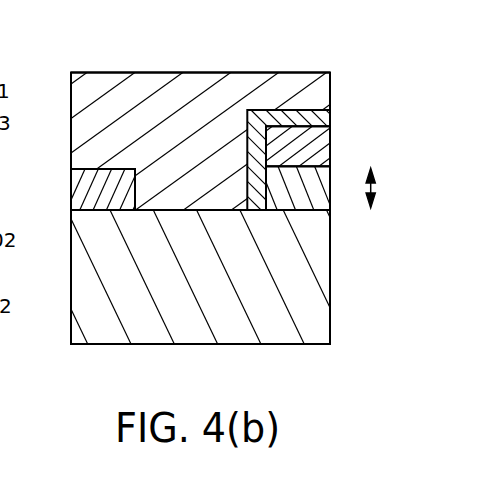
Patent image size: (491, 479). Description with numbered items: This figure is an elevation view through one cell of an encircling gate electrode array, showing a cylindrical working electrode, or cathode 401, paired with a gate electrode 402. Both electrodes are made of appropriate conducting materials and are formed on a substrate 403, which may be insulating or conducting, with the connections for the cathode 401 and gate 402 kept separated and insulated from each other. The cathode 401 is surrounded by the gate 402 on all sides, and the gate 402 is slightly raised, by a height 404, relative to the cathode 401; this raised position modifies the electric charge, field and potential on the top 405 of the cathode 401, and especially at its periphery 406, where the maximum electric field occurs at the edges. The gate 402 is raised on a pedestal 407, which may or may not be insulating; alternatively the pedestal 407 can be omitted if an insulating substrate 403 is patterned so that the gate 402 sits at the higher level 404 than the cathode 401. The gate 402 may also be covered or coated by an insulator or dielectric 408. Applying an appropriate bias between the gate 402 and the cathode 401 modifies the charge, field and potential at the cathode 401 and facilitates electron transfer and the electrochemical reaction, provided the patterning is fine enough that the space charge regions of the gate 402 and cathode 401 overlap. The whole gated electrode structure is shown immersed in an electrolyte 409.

The working electrode 401 is at (78, 168).
The gate electrode 402 is at (328, 147).
The substrate 403 is at (88, 343).
The raised height of gate 404 is at (375, 187).
The top of cathode 405 is at (100, 168).
The periphery of cathode top 406 is at (138, 172).
The pedestal 407 is at (327, 188).
The insulator/dielectric 408 is at (284, 111).
The electrolyte 409 is at (87, 77).